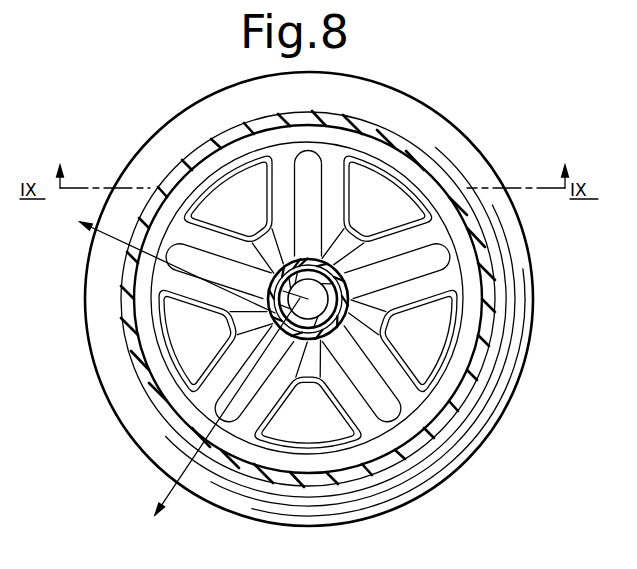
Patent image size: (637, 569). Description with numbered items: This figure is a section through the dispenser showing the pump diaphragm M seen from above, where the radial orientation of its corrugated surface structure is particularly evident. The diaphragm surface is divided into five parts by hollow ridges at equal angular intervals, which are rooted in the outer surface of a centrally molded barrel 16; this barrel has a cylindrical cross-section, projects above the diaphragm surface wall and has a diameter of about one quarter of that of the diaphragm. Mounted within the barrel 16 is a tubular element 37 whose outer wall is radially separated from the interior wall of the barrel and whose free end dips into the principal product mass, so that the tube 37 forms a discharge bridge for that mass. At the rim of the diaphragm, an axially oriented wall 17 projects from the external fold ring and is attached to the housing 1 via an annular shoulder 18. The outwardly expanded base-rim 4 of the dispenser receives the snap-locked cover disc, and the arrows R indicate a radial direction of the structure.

The base-rim 4 is at (436, 113).
The housing 1 is at (487, 270).
The axially oriented wall 17 is at (455, 336).
The annular shoulder 18 is at (462, 370).
The pump diaphragm M is at (435, 388).
The barrel 16 is at (348, 303).
The tubular element 37 is at (308, 300).
The radial direction R is at (181, 374).